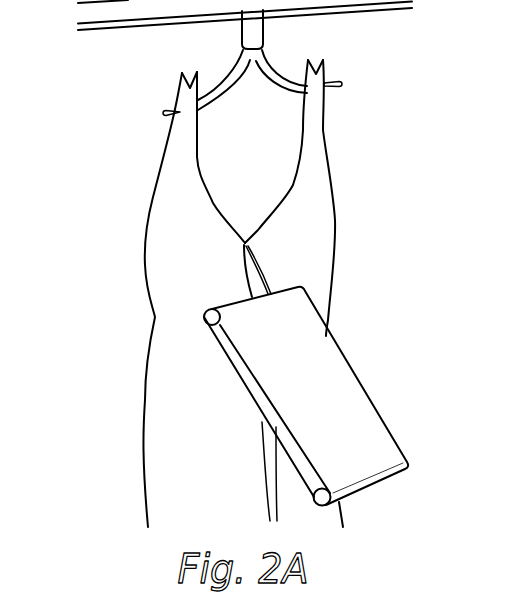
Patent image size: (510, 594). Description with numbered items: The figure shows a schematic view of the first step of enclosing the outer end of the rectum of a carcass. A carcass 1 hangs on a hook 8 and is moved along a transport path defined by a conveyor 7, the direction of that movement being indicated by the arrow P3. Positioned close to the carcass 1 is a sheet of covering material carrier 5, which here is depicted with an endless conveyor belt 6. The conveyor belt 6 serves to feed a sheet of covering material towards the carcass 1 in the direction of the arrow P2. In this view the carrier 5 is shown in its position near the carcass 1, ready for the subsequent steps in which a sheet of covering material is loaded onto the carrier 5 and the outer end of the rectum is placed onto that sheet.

The carcass 1 is at (315, 202).
The sheet of covering material carrier 5 is at (245, 388).
The endless conveyor belt 6 is at (318, 357).
The conveyor 7 is at (390, 0).
The hook 8 is at (258, 39).
The feeding direction P2 is at (375, 377).
The transport direction P3 is at (58, 51).